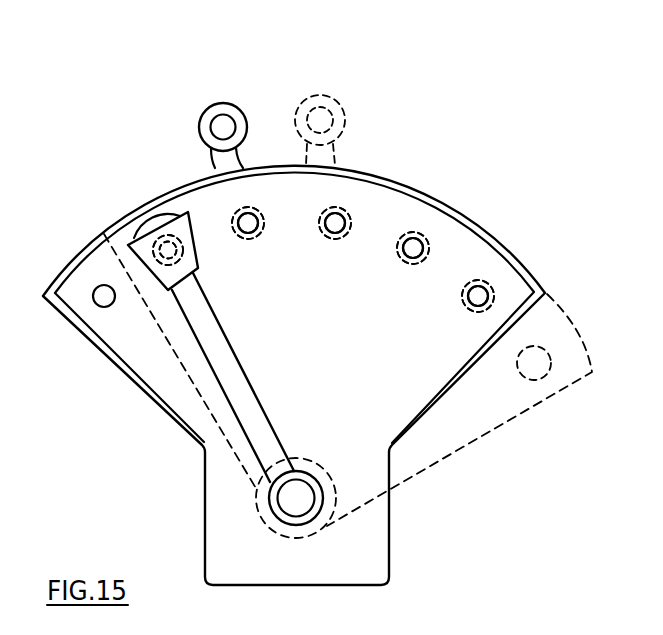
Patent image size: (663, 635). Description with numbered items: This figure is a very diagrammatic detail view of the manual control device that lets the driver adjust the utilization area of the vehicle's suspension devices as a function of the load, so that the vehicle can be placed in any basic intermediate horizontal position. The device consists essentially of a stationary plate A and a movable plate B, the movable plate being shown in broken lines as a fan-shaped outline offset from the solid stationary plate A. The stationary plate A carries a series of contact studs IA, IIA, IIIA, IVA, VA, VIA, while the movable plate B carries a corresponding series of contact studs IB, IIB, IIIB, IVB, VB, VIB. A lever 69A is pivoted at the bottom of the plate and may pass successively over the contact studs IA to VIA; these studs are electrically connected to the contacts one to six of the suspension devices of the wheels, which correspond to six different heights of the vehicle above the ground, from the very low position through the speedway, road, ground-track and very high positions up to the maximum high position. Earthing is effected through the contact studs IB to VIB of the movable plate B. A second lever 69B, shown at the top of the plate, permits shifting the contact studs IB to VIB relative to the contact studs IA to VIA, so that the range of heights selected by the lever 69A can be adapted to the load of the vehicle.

The stationary plate A is at (51, 268).
The movable plate B is at (573, 378).
The lever 69A is at (268, 433).
The lever 69B is at (237, 106).
The contact stud IA is at (100, 304).
The contact stud IIA is at (168, 258).
The contact stud IIIA is at (248, 234).
The contact stud IVA is at (332, 234).
The contact stud VA is at (412, 263).
The contact stud VIA is at (476, 307).
The contact stud IB is at (168, 233).
The contact stud IIB is at (250, 213).
The contact stud IIIB is at (340, 212).
The contact stud IVB is at (421, 240).
The contact stud VB is at (490, 290).
The contact stud VIB is at (534, 381).